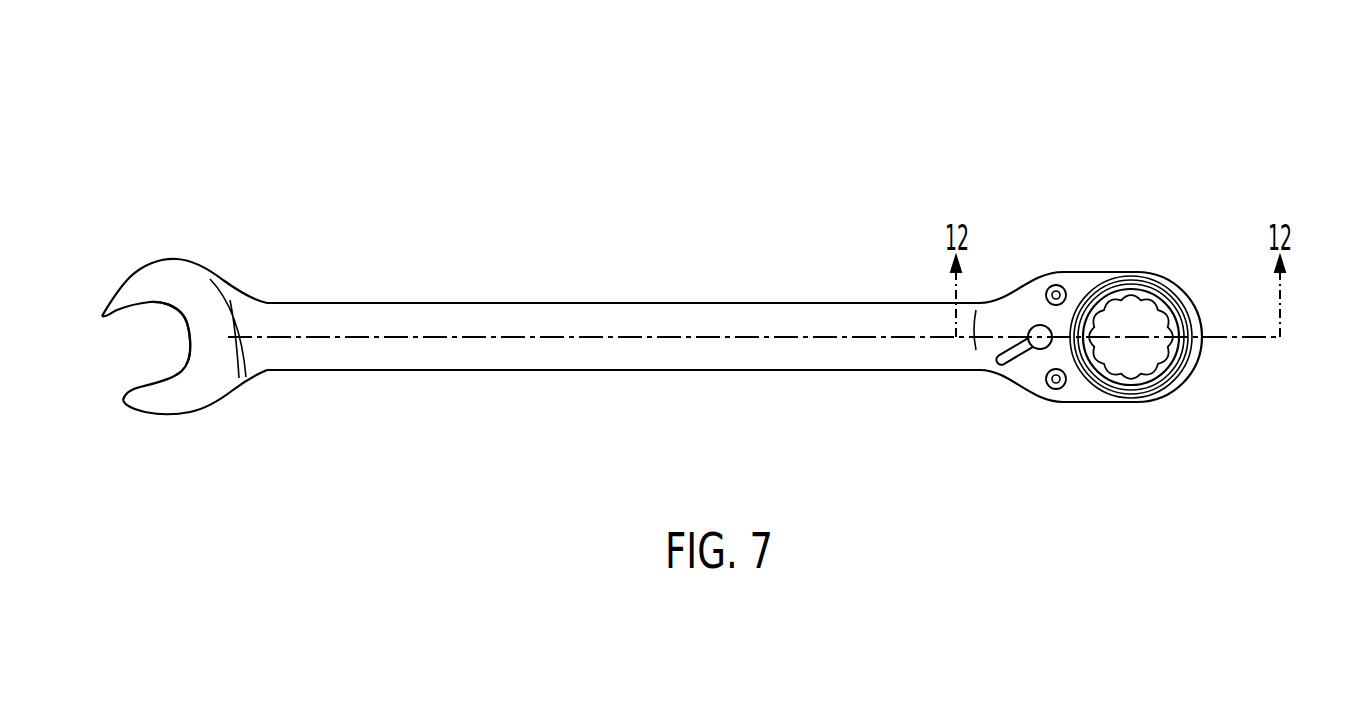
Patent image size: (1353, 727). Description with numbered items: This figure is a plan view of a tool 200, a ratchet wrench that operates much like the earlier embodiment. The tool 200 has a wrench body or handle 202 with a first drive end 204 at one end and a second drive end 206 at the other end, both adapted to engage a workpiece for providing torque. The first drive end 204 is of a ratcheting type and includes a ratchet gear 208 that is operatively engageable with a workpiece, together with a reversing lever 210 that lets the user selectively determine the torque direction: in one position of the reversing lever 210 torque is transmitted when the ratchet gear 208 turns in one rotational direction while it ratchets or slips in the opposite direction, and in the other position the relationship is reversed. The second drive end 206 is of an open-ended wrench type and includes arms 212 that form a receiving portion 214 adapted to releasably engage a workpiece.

The tool 200 is at (798, 96).
The handle 202 is at (813, 303).
The first drive end 204 is at (1108, 272).
The second drive end 206 is at (209, 268).
The ratchet gear 208 is at (1150, 381).
The reversing lever 210 is at (1010, 380).
The arms 212 is at (131, 279).
The receiving portion 214 is at (189, 355).